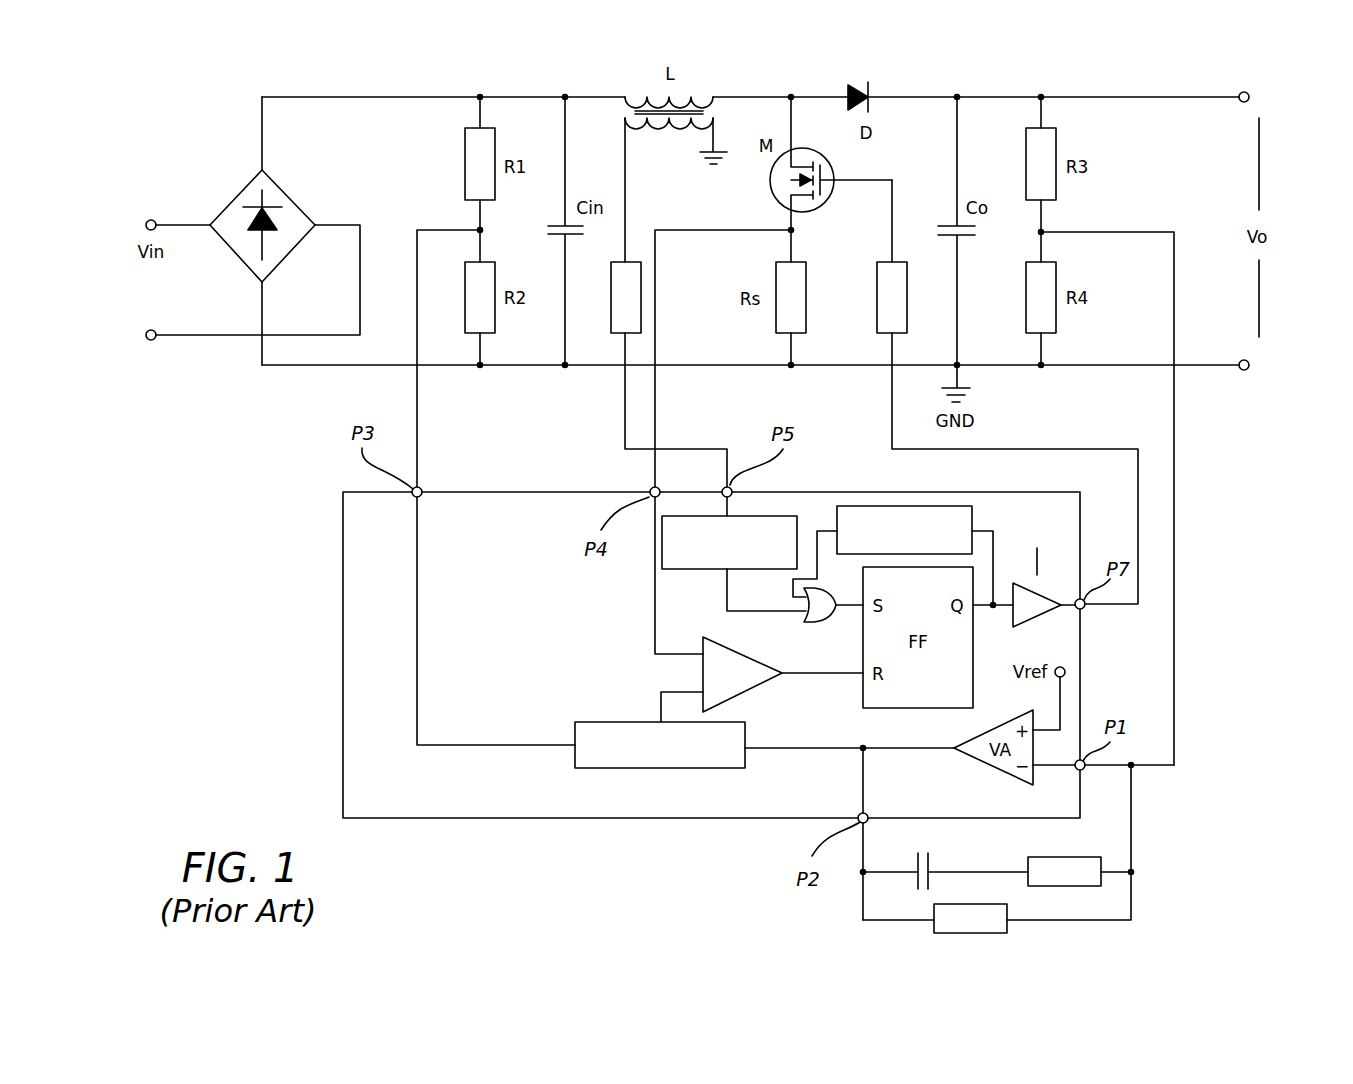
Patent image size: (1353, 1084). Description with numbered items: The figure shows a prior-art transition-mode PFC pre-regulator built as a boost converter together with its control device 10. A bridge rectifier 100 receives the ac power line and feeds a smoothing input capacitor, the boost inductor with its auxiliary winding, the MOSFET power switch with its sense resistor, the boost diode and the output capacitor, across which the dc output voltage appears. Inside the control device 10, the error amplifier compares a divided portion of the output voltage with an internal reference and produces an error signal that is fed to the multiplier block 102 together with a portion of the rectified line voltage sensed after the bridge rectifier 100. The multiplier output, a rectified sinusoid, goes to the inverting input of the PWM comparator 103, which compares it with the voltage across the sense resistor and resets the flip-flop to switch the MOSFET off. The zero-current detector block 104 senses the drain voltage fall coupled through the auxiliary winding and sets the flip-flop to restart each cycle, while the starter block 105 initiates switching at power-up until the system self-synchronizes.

The control device 10 is at (343, 672).
The bridge rectifier 100 is at (250, 197).
The multiplier block 102 is at (660, 768).
The PWM comparator 103 is at (742, 697).
The zero-current detector block 104 is at (683, 569).
The starter block 105 is at (972, 517).